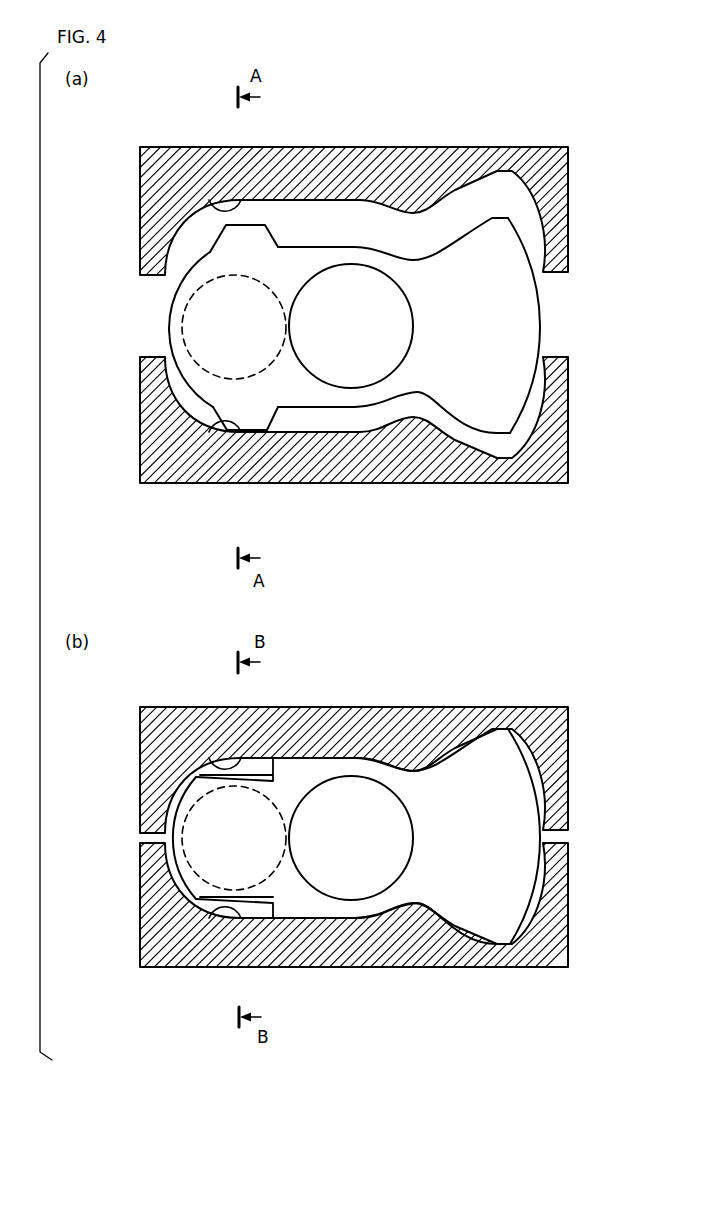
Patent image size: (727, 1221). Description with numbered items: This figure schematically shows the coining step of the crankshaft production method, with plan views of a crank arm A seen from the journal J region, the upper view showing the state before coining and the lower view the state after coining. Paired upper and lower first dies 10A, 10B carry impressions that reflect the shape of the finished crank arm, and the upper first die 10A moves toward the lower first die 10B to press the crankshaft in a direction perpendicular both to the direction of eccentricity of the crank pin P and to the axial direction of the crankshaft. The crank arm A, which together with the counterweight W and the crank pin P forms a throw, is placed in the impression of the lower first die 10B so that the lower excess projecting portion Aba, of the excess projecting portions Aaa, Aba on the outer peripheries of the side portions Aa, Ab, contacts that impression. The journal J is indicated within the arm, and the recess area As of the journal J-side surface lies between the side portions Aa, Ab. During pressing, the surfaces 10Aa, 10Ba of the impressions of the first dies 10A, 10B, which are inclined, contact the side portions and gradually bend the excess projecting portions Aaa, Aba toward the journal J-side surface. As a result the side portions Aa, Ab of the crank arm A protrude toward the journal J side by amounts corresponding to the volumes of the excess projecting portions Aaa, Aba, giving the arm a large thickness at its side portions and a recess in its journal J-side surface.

The upper first die 10A is at (566, 250).
The lower first die 10B is at (567, 380).
The surface of the impression of the upper first die 10Aa is at (215, 208).
The surface of the impression of the lower first die 10Ba is at (212, 433).
The counterweight W is at (538, 216).
The crank arm A is at (311, 250).
The side portion Aa is at (258, 252).
The side portion Ab is at (263, 410).
The excess projecting portion Aaa is at (247, 226).
The excess projecting portion Aba is at (249, 431).
The recess area As is at (232, 357).
The crank pin P is at (280, 360).
The journal J is at (364, 386).